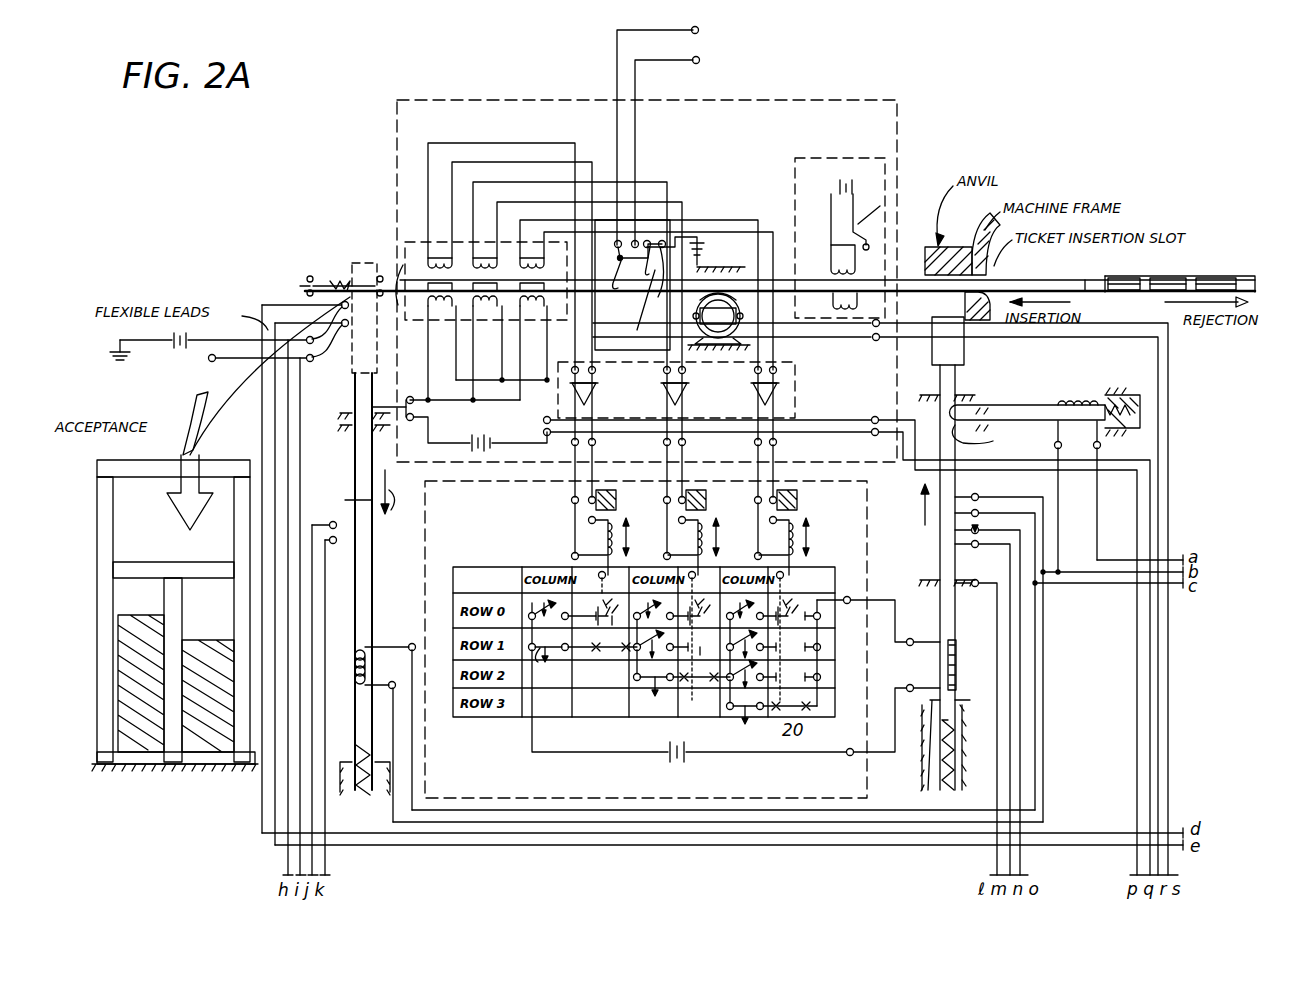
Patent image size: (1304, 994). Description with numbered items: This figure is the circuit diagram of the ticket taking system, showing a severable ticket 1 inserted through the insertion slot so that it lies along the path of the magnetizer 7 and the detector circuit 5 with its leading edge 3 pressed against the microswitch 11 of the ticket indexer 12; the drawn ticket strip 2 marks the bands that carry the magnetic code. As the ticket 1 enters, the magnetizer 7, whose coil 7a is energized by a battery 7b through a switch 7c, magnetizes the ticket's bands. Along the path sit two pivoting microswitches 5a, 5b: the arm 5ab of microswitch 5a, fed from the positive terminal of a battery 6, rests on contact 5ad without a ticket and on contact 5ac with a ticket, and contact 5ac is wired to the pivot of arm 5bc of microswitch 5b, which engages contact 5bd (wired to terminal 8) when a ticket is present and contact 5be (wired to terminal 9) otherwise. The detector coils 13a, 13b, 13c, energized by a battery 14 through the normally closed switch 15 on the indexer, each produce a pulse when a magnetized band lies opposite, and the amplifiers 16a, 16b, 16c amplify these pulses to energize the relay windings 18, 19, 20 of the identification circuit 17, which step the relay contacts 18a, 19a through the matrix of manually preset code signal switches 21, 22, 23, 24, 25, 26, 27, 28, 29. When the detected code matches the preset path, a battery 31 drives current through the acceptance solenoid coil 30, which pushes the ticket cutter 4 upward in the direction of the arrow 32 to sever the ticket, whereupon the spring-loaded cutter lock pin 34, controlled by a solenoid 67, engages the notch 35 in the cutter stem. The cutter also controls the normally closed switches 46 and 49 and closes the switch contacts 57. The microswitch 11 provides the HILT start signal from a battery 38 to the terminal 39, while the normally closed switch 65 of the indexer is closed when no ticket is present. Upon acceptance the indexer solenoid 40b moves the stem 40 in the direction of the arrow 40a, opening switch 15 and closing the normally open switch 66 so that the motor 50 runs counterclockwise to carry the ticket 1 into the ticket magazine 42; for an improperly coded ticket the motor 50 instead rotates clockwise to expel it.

The ticket 1 is at (1089, 280).
The magnetic ticket strip 2 is at (1258, 283).
The second short edge 3 is at (403, 260).
The ticket cutter 4 is at (965, 345).
The detector circuit 5 is at (647, 281).
The microswitch 5a is at (630, 302).
The microswitch 5b is at (609, 283).
The switch arm 5ab is at (649, 286).
The electrical contact 5ac is at (651, 276).
The electrical contact 5ad is at (660, 240).
The switch arm 5bc is at (610, 251).
The electrical contact 5bd is at (634, 240).
The electrical contact 5be is at (617, 242).
The battery 6 is at (705, 250).
The magnetizer 7 is at (795, 173).
The coil 7a is at (844, 277).
The battery 7b is at (840, 166).
The switch 7c is at (880, 216).
The terminal 8 is at (700, 60).
The terminal 9 is at (699, 28).
The microswitch 11 is at (357, 240).
The ticket indexer 12 is at (352, 268).
The detector 13a is at (510, 271).
The detector 13b is at (577, 291).
The detector 13c is at (646, 310).
The battery 14 is at (484, 420).
The switch 15 is at (424, 374).
The amplifier 16a is at (596, 393).
The amplifier 16b is at (686, 393).
The amplifier 16c is at (778, 390).
The identification circuit 17 is at (646, 639).
The relay energizing winding 18 is at (601, 532).
The relay energizing winding 19 is at (692, 532).
The relay energizing winding 20 is at (782, 532).
The relay contact 18a is at (612, 650).
The relay contact 19a is at (702, 680).
The code signal switch 21 is at (540, 607).
The code signal switch 22 is at (532, 650).
The code signal switch 23 is at (645, 607).
The code signal switch 24 is at (662, 636).
The code signal switch 25 is at (637, 681).
The code signal switch 26 is at (738, 607).
The code signal switch 27 is at (755, 636).
The code signal switch 28 is at (755, 666).
The code signal switch 29 is at (734, 711).
The acceptance circuit solenoid coil 30 is at (956, 660).
The battery 31 is at (668, 742).
The arrow 32 is at (910, 504).
The cutter lock pin 34 is at (976, 400).
The notch 35 is at (991, 439).
The battery 38 is at (178, 352).
The terminal 39 is at (214, 366).
The stem 40 is at (365, 592).
The arrow 40a is at (397, 514).
The solenoid 40b is at (353, 648).
The ticket magazine 42 is at (110, 778).
The normally closed switch 46 is at (975, 548).
The normally closed switch 49 is at (955, 583).
The motor 50 is at (736, 334).
The switch contacts 57 is at (975, 492).
The normally closed switch 65 is at (298, 286).
The normally open switch 66 is at (345, 500).
The solenoid 67 is at (1078, 438).